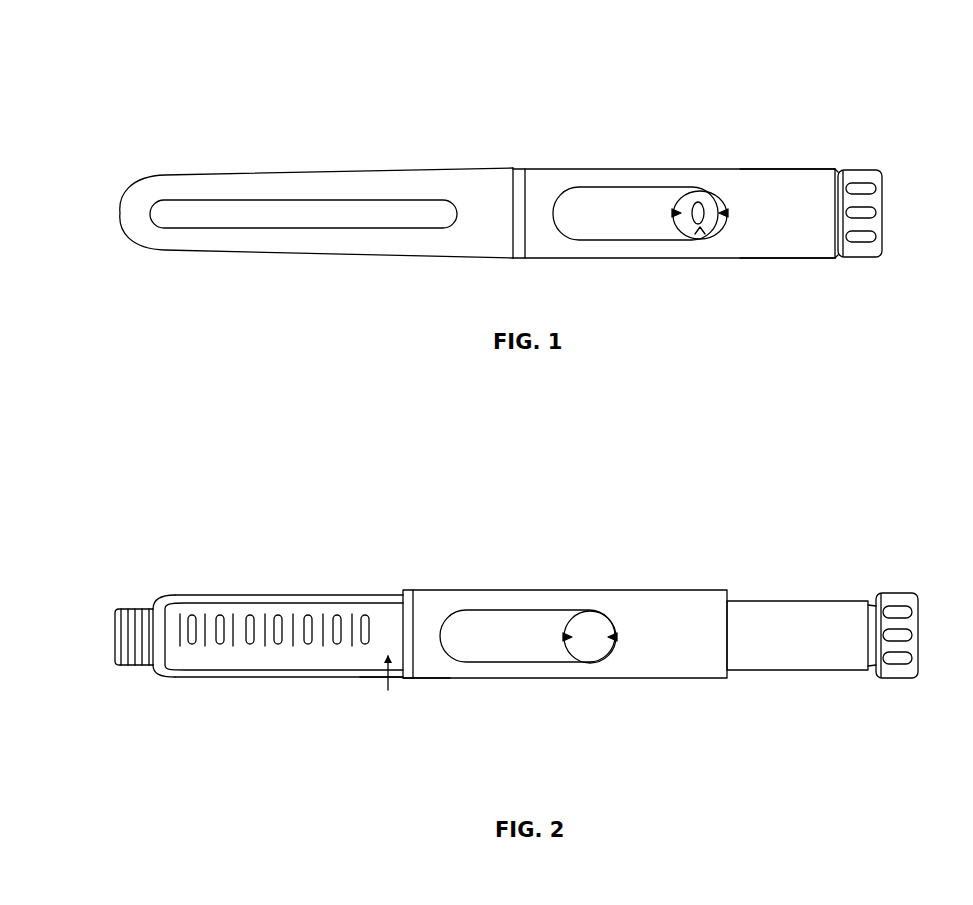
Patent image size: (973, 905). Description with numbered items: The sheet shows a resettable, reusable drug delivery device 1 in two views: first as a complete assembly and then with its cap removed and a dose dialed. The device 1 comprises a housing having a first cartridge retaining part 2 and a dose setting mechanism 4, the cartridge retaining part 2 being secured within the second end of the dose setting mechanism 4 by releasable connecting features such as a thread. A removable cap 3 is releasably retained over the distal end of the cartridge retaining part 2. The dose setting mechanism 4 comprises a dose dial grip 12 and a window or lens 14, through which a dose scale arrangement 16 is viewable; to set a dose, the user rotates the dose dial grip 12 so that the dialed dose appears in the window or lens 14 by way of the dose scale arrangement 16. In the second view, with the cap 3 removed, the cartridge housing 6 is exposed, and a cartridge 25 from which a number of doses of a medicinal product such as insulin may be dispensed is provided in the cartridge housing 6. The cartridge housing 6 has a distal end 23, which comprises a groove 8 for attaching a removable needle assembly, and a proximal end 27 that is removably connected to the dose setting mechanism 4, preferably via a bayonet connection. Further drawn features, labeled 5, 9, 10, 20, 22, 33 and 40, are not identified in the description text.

In FIG. 1, the drug delivery device 1 is at (443, 40).
In FIG. 2, the drug delivery device 1 is at (490, 487).
In FIG. 1, the cartridge retaining part 2 is at (350, 125).
In FIG. 1, the removable cap 3 is at (258, 166).
In FIG. 1, the dose setting mechanism 4 is at (645, 118).
In FIG. 2, the dose setting mechanism 4 is at (604, 553).
In FIG. 1, the dose button 5 is at (882, 198).
In FIG. 2, the dose button 5 is at (918, 633).
In FIG. 2, the cartridge housing 6 is at (343, 597).
In FIG. 2, the groove 8 is at (132, 600).
In FIG. 2, the housing front end 9 is at (403, 590).
In FIG. 2, the dose sleeve 10 is at (818, 598).
In FIG. 1, the dose dial grip 12 is at (878, 168).
In FIG. 2, the dose dial grip 12 is at (915, 595).
In FIG. 1, the window or lens 14 is at (710, 242).
In FIG. 2, the window or lens 14 is at (605, 660).
In FIG. 1, the dose scale arrangement 16 is at (692, 240).
In FIG. 2, the dose scale arrangement 16 is at (582, 660).
In FIG. 2, the cartridge 20 is at (243, 597).
In FIG. 2, the housing lower edge 22 is at (425, 700).
In FIG. 2, the distal end 23 is at (150, 685).
In FIG. 2, the cartridge 25 is at (255, 677).
In FIG. 2, the proximal end 27 is at (372, 700).
In FIG. 2, the fill level indicator 33 is at (388, 690).
In FIG. 1, the housing rear portion 40 is at (790, 168).